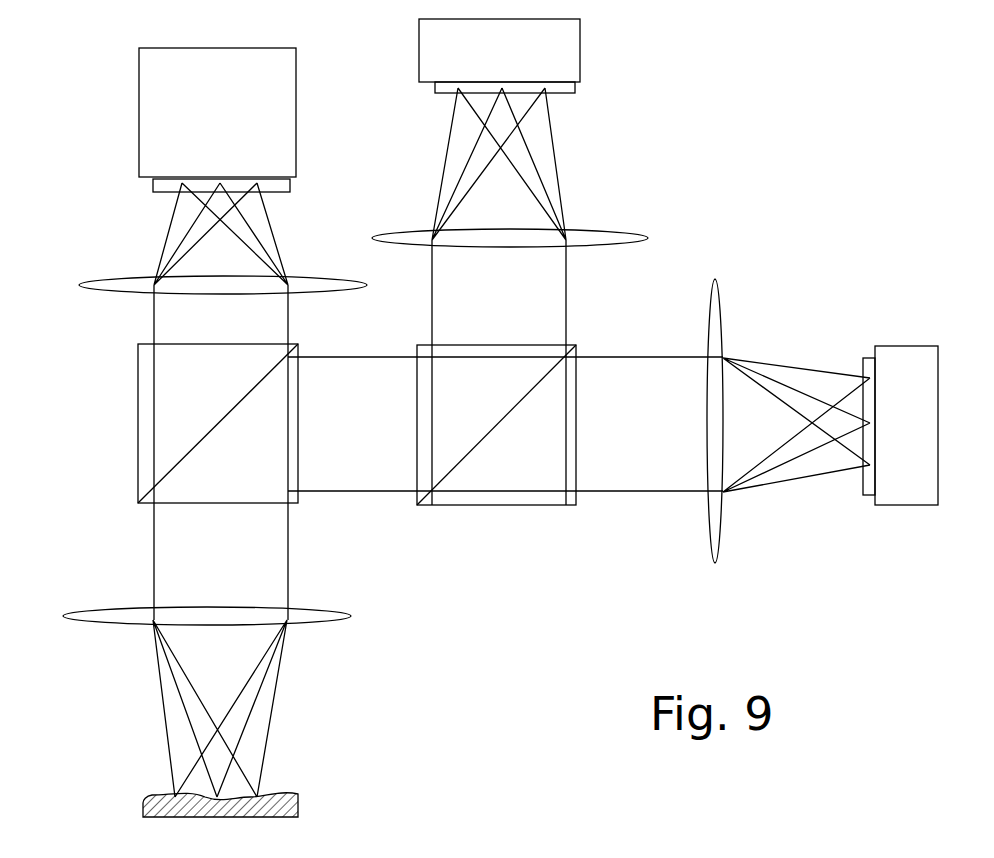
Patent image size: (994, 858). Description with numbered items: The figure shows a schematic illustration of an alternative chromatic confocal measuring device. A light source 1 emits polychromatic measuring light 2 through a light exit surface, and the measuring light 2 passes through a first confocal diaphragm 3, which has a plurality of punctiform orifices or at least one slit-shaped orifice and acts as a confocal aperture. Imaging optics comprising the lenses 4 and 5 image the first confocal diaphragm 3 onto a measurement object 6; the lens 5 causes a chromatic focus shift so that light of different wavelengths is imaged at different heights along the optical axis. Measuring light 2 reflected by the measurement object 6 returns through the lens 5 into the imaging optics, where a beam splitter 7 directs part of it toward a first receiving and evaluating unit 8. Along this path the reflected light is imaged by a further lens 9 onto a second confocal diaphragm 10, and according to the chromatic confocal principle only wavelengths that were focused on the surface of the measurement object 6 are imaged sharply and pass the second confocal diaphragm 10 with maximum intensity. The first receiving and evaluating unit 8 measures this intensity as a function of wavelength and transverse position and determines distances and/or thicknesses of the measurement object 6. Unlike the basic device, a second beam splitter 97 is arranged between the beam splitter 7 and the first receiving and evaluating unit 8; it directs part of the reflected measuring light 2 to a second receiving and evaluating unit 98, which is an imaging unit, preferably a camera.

The light source 1 is at (217, 112).
The measuring light 2 is at (277, 235).
The first confocal diaphragm 3 is at (155, 193).
The lens 4 is at (105, 277).
The lens 5 is at (352, 614).
The measurement object 6 is at (298, 795).
The beam splitter 7 is at (145, 437).
The first receiving and evaluating unit 8 is at (890, 505).
The further lens 9 is at (717, 278).
The second confocal diaphragm 10 is at (870, 358).
The second beam splitter 97 is at (530, 503).
The second receiving and evaluating unit 98 is at (580, 44).